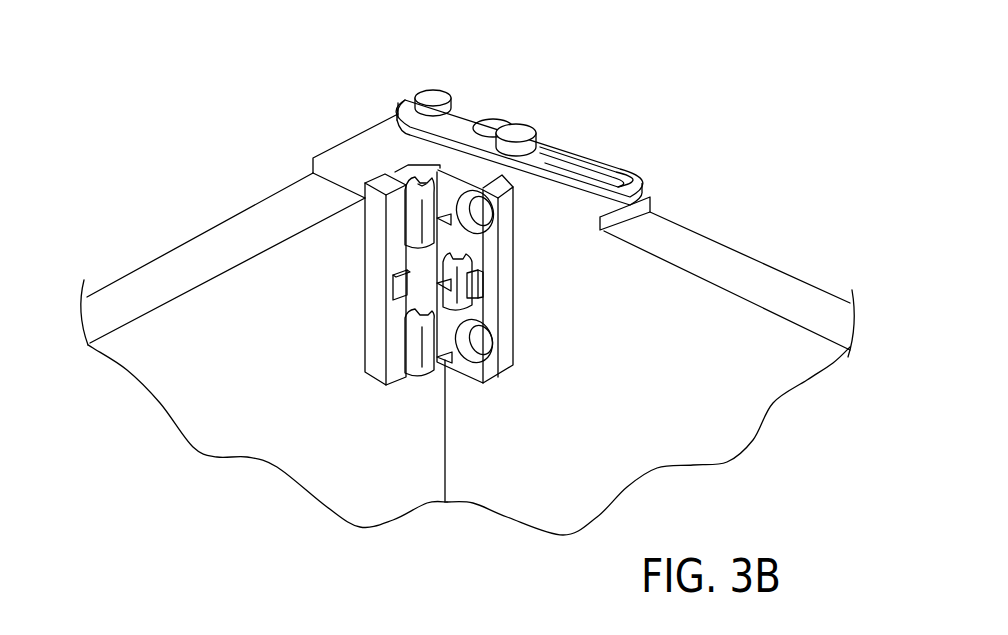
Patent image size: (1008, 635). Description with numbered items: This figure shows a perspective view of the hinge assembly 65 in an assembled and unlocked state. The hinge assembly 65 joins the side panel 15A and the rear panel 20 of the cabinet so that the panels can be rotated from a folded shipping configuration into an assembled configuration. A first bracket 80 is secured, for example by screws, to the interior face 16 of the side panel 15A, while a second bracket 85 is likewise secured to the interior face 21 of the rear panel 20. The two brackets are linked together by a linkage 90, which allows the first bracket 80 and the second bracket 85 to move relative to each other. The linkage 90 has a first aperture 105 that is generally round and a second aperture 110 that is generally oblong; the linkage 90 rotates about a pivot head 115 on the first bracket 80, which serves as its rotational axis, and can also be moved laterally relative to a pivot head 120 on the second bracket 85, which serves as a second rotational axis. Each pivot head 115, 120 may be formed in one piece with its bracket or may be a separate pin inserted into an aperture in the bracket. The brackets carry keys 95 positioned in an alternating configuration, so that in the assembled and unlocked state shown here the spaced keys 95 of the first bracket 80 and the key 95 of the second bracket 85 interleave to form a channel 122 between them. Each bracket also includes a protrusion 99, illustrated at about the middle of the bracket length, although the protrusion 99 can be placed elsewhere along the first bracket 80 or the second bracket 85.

The side panel 15A is at (167, 266).
The rear panel 20 is at (737, 253).
The interior face of the side panel 16 is at (224, 420).
The interior face of the rear panel 21 is at (674, 427).
The hinge assembly 65 is at (640, 97).
The first bracket 80 is at (370, 152).
The second bracket 85 is at (503, 248).
The linkage 90 is at (483, 110).
The key 95 is at (413, 222).
The protrusion 99 is at (400, 287).
The first aperture 105 is at (397, 86).
The second aperture 110 is at (595, 166).
The pivot head 115 is at (432, 96).
The pivot head 120 is at (513, 137).
The channel 122 is at (423, 185).